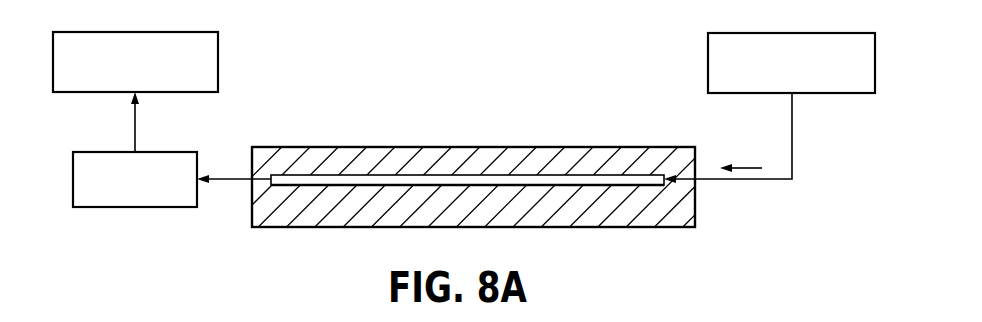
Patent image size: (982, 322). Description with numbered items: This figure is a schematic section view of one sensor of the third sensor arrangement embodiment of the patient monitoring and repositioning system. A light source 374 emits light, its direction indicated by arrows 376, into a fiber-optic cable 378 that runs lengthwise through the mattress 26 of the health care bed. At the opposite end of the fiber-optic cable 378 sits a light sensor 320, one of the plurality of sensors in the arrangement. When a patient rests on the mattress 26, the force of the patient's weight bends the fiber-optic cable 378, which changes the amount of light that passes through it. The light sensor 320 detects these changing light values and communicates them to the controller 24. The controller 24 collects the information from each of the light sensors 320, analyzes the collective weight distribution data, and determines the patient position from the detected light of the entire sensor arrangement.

The controller 24 is at (175, 32).
The light sensor 320 is at (175, 152).
The light source 374 is at (830, 33).
The mattress 26 is at (382, 147).
The fiber-optic cable 378 is at (486, 178).
The arrows 376 is at (742, 167).